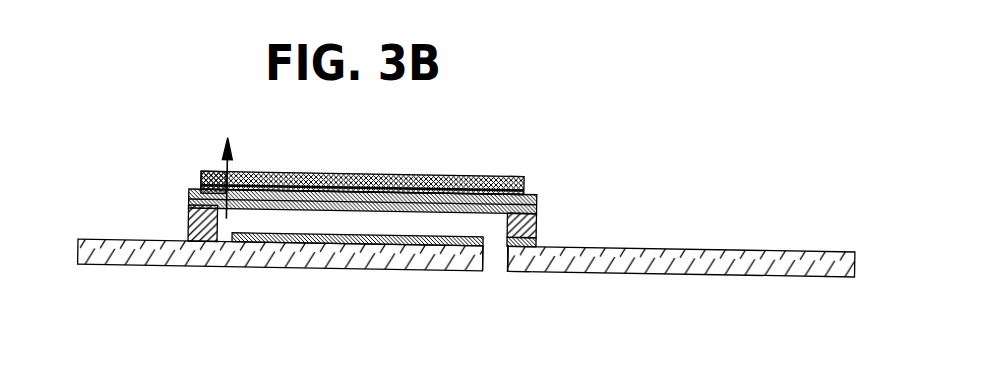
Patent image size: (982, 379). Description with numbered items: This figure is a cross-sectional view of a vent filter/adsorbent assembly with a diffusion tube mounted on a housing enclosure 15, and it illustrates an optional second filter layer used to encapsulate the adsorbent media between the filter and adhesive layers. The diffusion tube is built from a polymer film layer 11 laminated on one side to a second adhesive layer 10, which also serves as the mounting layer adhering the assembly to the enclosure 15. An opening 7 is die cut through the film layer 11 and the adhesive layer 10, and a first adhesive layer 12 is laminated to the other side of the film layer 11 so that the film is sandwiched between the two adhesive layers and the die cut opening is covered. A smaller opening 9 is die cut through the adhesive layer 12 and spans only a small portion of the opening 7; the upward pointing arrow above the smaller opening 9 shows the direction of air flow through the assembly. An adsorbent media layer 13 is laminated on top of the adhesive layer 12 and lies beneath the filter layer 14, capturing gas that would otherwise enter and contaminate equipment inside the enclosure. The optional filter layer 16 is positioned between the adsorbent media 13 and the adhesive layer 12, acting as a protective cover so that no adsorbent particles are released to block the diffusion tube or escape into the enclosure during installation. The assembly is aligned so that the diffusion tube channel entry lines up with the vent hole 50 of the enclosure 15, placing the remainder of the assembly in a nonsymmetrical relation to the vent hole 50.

The opening 7 is at (498, 272).
The smaller opening 9 is at (212, 175).
The second adhesive layer 10 is at (536, 242).
The film layer 11 is at (536, 223).
The first adhesive layer 12 is at (536, 205).
The adsorbent media layer 13 is at (523, 190).
The filter layer 14 is at (523, 183).
The housing enclosure 15 is at (685, 262).
The optional filter layer 16 is at (453, 175).
The vent hole 50 is at (492, 272).